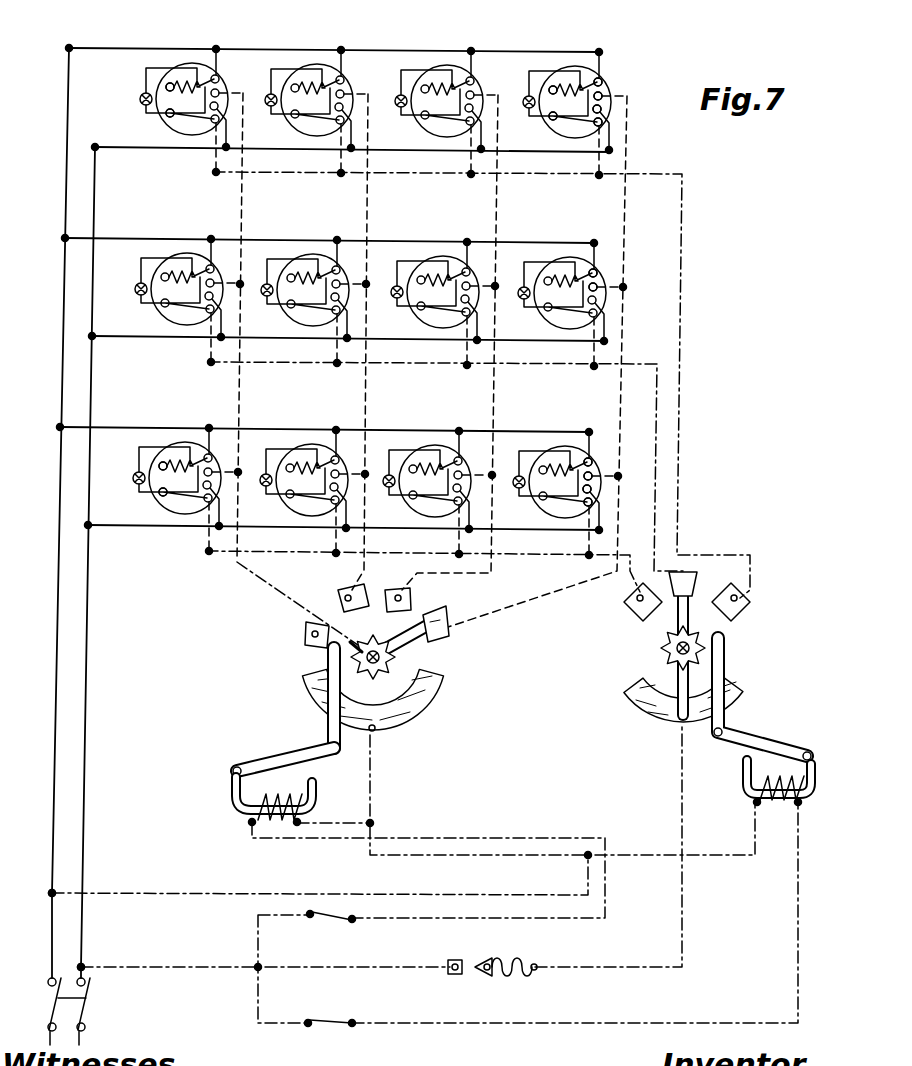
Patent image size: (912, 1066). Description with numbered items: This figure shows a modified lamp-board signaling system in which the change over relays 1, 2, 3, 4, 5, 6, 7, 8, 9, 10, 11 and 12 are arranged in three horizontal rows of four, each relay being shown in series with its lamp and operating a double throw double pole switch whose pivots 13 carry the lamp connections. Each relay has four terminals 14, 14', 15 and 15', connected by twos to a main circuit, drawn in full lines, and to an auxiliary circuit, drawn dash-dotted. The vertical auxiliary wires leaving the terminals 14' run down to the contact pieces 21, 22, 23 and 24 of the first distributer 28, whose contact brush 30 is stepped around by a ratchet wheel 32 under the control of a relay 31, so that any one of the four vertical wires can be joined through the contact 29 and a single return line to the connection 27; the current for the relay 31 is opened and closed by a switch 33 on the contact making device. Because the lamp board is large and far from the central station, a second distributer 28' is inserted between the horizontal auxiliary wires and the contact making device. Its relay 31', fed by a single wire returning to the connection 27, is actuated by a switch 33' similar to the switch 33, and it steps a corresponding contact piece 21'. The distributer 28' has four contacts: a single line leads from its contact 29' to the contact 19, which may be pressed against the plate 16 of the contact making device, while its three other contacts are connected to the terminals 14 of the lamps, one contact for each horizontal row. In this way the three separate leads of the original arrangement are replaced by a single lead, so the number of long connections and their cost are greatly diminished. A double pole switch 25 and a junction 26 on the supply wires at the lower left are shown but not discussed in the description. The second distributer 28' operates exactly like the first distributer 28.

The change over relay 1 is at (563, 74).
The change over relay 2 is at (560, 264).
The change over relay 3 is at (560, 454).
The change over relay 4 is at (441, 72).
The change over relay 5 is at (440, 263).
The change over relay 6 is at (435, 453).
The change over relay 7 is at (293, 73).
The change over relay 8 is at (305, 262).
The change over relay 9 is at (305, 452).
The change over relay 10 is at (192, 72).
The change over relay 11 is at (188, 262).
The change over relay 12 is at (180, 451).
The switch pivots 13 is at (167, 114).
The relay terminal 14 is at (635, 322).
The relay terminal 14' is at (633, 258).
The relay terminal 15 is at (632, 289).
The relay terminal 15' is at (632, 240).
The plate 16 is at (450, 962).
The contact 19 is at (522, 948).
The contact piece 21 is at (446, 631).
The ratchet bar 21' is at (687, 643).
The contact piece 22 is at (397, 594).
The contact piece 23 is at (345, 597).
The contact piece 24 is at (304, 640).
The double-pole switch 25 is at (88, 1010).
The conductor junction 26 is at (84, 965).
The connection 27 is at (55, 891).
The distributer 28 is at (435, 688).
The second distributer 28' is at (638, 652).
The distributer contact 29 is at (378, 717).
The distributer contact 29' is at (663, 721).
The contact brush 30 is at (420, 652).
The relay 31 is at (252, 788).
The relay 31' is at (753, 733).
The ratchet wheel 32 is at (356, 646).
The switch 33 is at (332, 934).
The switch 33' is at (341, 1002).